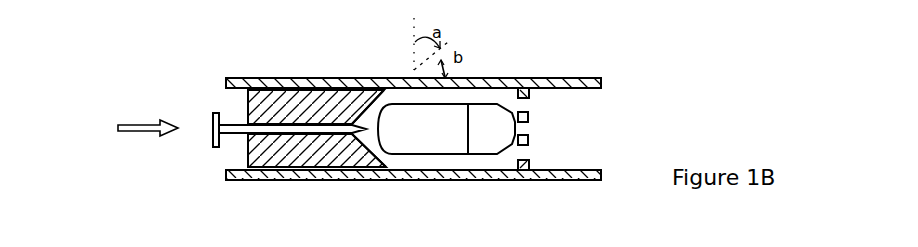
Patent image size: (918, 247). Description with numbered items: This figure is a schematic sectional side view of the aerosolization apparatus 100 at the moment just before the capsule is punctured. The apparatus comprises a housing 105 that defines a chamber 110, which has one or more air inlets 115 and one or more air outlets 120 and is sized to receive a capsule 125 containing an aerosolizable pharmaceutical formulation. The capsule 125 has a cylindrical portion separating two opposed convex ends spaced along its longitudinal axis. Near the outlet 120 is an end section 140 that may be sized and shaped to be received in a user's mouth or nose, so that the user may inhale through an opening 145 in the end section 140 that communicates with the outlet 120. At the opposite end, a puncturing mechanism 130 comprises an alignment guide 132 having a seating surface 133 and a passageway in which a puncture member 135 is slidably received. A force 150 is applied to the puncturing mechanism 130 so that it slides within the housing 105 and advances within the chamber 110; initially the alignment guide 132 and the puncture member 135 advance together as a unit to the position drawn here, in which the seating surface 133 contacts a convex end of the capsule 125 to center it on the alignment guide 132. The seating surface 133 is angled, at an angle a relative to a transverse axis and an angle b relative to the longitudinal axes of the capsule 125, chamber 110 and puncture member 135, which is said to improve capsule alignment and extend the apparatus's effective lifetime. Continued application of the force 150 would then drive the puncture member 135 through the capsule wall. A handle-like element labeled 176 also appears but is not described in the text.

The aerosolization apparatus 100 is at (281, 38).
The housing 105 is at (470, 185).
The chamber 110 is at (509, 78).
The air inlet 115 is at (352, 182).
The air outlet 120 is at (537, 107).
The capsule 125 is at (468, 121).
The puncturing mechanism 130 is at (215, 70).
The alignment guide 132 is at (302, 182).
The seating surface 133 is at (407, 163).
The puncture member 135 is at (241, 133).
The end section 140 is at (588, 77).
The opening 145 is at (610, 133).
The force 150 is at (143, 135).
The handle 176 is at (210, 138).